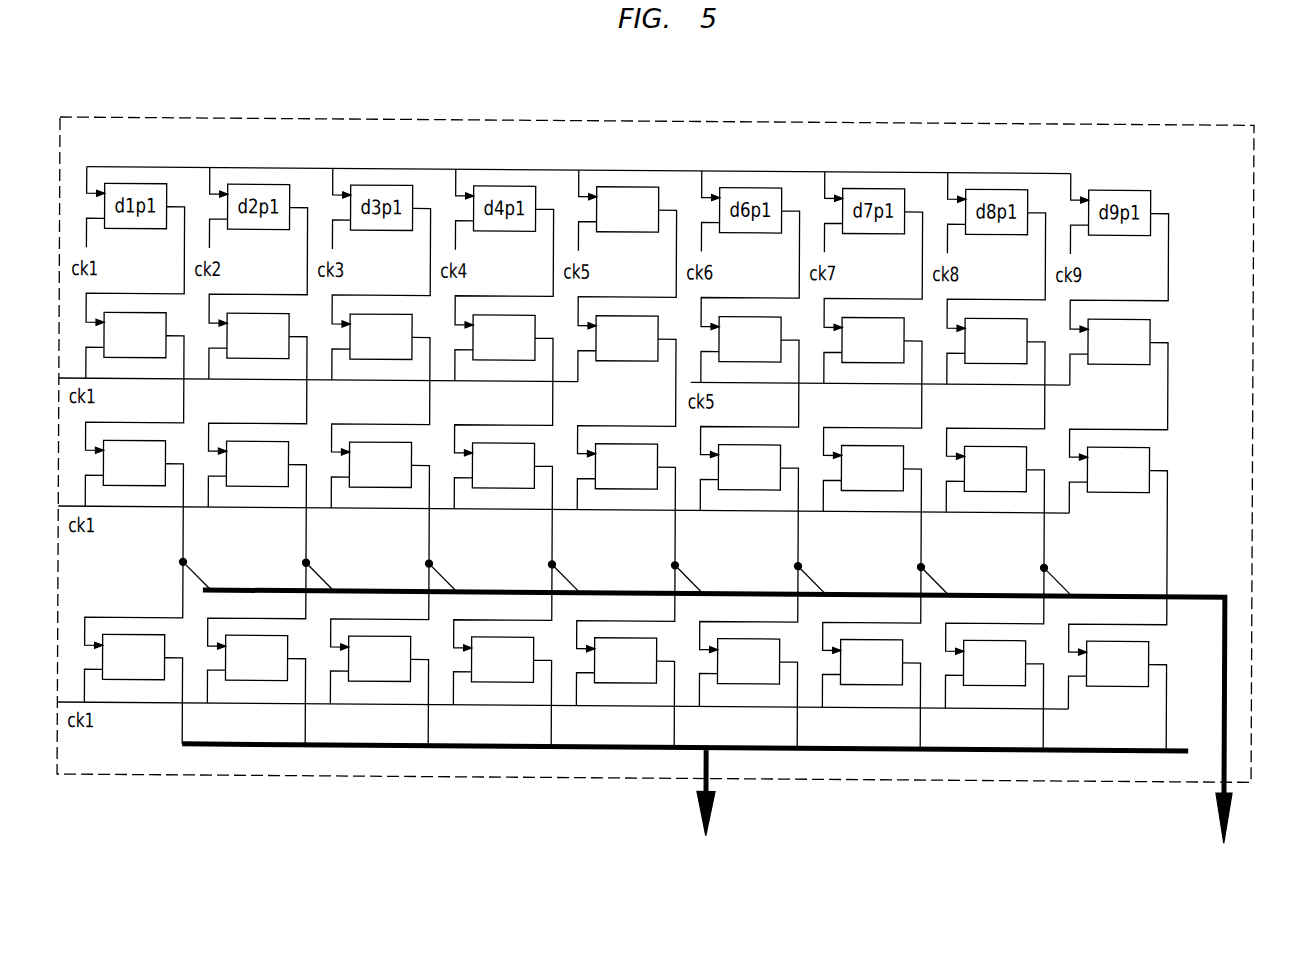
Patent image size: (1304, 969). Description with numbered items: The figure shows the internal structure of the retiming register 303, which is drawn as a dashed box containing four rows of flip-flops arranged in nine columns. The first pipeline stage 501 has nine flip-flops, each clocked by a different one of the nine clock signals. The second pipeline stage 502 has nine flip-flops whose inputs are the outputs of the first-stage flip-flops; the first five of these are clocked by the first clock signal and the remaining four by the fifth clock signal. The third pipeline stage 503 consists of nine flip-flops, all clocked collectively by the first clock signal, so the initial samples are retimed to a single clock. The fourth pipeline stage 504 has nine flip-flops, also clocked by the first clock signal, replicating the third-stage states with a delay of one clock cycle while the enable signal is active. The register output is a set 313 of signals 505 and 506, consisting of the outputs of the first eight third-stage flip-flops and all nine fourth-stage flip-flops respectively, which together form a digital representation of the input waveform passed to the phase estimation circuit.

The retiming register 303 is at (716, 117).
The first pipeline stage 501 is at (634, 183).
The second pipeline stage 502 is at (82, 334).
The third pipeline stage 503 is at (82, 460).
The fourth pipeline stage 504 is at (82, 654).
The signals from third pipeline stage 505 is at (1232, 609).
The signals from fourth pipeline stage 506 is at (702, 767).
The output signal set of the retiming register 313 is at (714, 813).